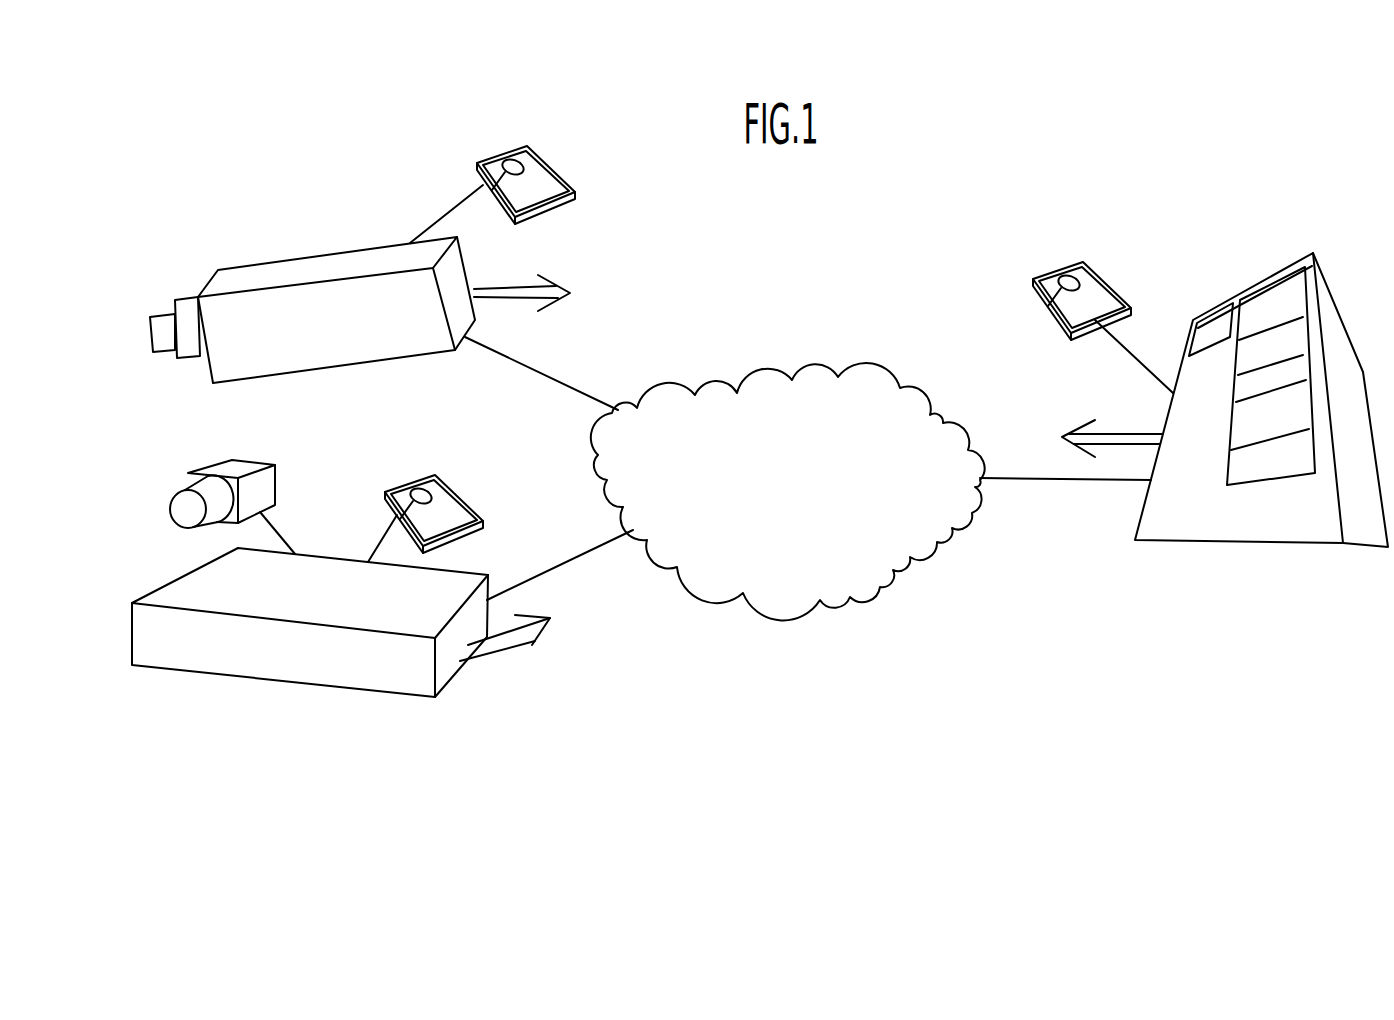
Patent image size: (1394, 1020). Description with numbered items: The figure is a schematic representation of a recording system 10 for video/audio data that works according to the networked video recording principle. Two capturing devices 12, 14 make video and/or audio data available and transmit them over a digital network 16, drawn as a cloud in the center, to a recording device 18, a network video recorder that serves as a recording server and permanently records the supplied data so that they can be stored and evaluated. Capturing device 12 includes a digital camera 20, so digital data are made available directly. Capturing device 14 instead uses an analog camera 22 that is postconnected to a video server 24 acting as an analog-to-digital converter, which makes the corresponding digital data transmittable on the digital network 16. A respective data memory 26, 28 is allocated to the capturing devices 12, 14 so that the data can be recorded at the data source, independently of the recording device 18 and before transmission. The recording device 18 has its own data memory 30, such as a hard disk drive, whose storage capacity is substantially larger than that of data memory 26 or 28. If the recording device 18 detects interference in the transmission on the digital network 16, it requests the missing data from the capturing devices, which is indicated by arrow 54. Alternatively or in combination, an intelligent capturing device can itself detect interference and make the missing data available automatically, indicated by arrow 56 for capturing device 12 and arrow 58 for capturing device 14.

The recording system 10 is at (1033, 571).
The capturing device 12 is at (384, 251).
The capturing device 14 is at (382, 597).
The digital network 16 is at (770, 390).
The recording device 18 is at (1207, 442).
The digital camera 20 is at (254, 272).
The analog camera 22 is at (248, 466).
The video server 24 is at (337, 673).
The data memory 26 is at (555, 182).
The data memory 28 is at (453, 507).
The data memory 30 is at (1099, 298).
The arrow 54 is at (1124, 440).
The arrow 56 is at (513, 290).
The arrow 58 is at (500, 638).